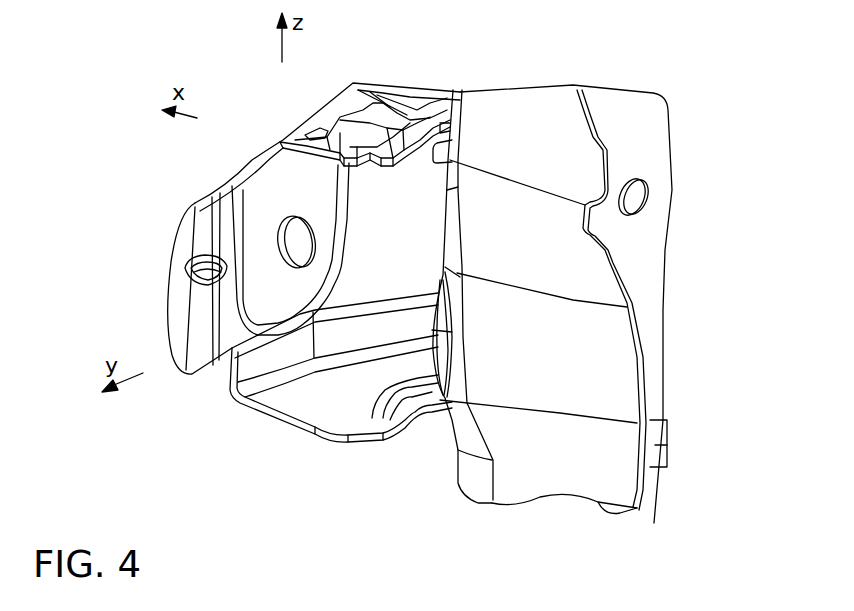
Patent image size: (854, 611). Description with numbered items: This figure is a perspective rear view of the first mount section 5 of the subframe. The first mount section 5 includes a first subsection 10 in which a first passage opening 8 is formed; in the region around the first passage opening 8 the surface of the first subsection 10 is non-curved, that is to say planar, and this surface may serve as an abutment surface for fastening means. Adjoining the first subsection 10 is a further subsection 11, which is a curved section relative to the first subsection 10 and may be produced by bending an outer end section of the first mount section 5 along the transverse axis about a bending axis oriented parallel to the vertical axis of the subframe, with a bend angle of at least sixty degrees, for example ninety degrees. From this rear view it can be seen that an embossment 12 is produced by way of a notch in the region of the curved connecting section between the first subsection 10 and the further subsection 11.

The first mount section 5 is at (184, 185).
The first passage opening 8 is at (294, 240).
The first subsection 10 is at (228, 333).
The further subsection 11 is at (177, 303).
The embossment 12 is at (194, 270).